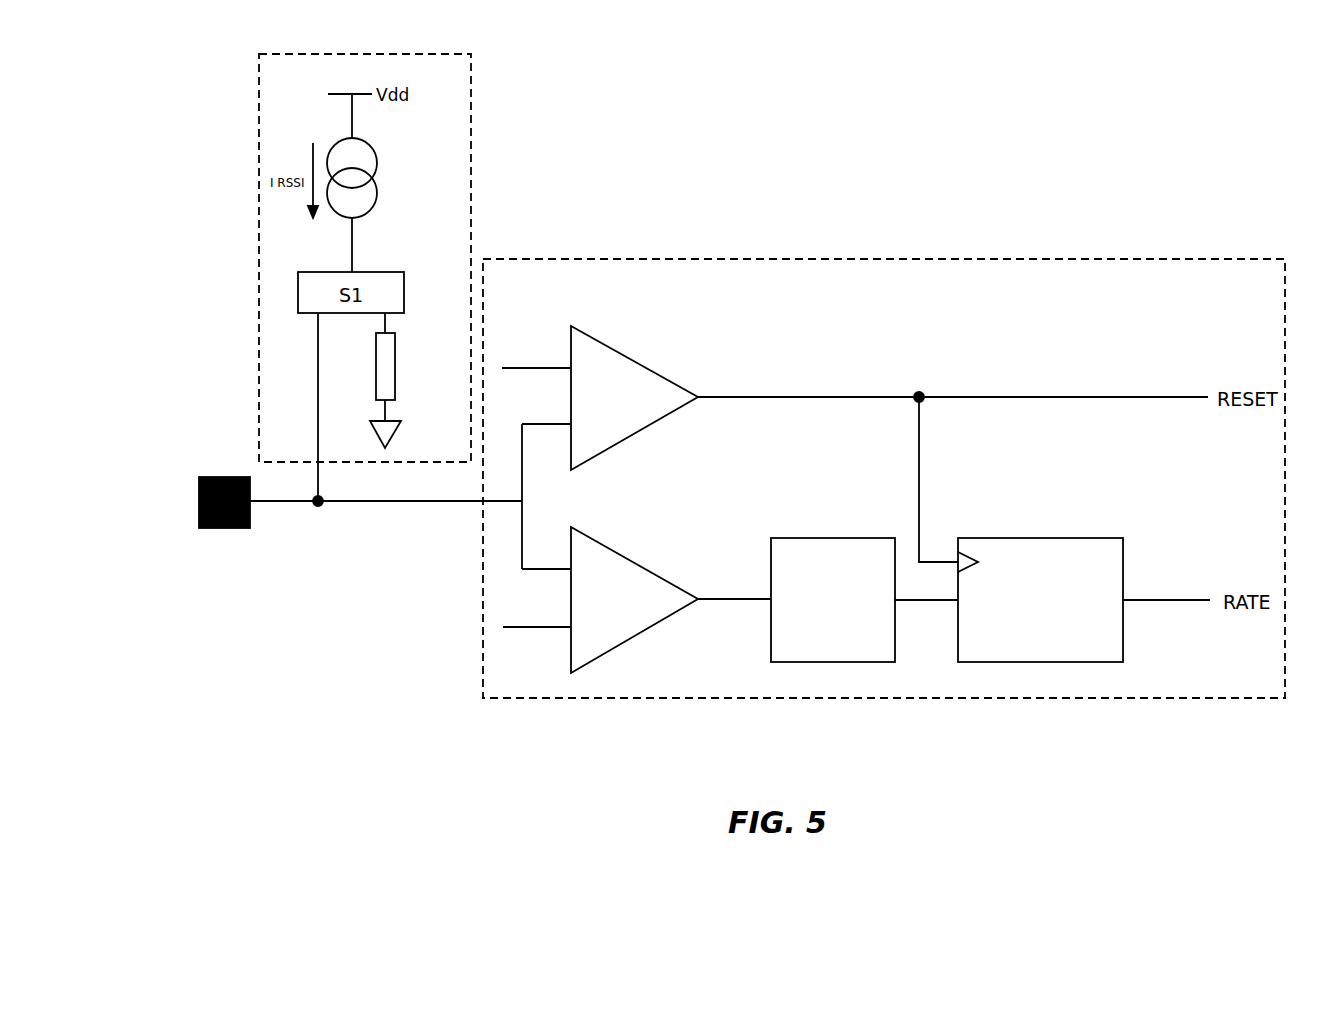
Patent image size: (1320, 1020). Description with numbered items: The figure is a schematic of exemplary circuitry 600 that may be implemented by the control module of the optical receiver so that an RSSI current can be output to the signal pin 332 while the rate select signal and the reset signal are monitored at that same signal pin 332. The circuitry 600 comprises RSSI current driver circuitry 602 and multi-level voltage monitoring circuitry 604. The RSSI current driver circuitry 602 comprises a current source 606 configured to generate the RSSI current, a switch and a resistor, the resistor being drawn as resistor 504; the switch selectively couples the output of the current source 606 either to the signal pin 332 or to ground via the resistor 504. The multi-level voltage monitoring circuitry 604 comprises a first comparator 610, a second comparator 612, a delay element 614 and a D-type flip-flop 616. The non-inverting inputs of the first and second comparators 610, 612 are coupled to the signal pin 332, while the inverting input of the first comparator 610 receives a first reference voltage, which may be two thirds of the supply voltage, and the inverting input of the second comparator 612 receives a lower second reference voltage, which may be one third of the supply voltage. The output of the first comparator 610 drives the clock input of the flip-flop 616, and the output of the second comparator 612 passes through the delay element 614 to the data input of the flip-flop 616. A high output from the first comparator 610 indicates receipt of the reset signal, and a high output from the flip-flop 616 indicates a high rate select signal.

The circuitry 600 is at (168, 78).
The RSSI current driver circuitry 602 is at (297, 76).
The current source 606 is at (377, 164).
The resistor 504 is at (395, 345).
The signal pin 332 is at (203, 478).
The multi-level voltage monitoring circuitry 604 is at (523, 282).
The first comparator 610 is at (632, 358).
The second comparator 612 is at (625, 558).
The delay element 614 is at (815, 627).
The D-type flip-flop 616 is at (1054, 642).